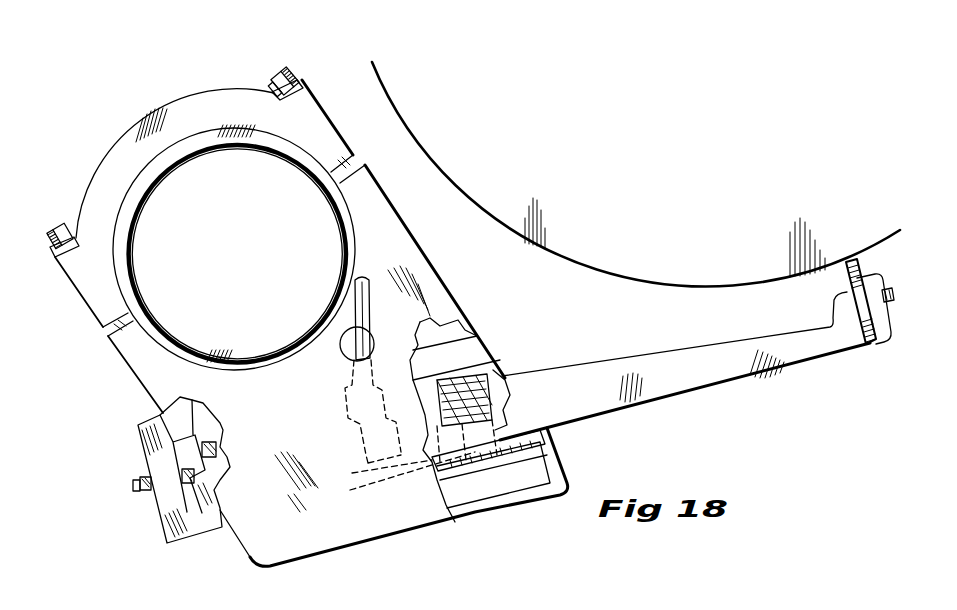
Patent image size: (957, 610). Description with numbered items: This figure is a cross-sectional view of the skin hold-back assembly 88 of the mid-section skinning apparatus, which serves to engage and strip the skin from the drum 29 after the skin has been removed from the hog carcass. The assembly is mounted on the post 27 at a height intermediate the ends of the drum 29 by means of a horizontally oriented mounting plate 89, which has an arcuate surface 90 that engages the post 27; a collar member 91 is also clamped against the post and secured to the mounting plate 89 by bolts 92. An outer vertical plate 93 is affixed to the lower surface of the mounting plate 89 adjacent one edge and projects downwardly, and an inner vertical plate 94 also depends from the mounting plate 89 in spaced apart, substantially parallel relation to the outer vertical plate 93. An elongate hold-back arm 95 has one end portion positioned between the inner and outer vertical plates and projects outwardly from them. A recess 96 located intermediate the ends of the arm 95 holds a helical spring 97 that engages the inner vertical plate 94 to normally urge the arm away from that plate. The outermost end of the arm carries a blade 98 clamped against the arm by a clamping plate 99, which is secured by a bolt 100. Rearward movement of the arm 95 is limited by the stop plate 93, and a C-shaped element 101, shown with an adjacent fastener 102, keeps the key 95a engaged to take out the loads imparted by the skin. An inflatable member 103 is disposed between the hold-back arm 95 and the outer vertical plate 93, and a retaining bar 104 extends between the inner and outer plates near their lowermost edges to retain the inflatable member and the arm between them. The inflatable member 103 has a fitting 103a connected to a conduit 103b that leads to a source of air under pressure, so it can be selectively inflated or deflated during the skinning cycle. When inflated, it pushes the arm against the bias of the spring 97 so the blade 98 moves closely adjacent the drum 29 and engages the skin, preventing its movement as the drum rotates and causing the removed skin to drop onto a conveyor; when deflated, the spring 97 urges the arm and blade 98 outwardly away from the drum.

The post 27 is at (290, 162).
The drum 29 is at (650, 302).
The skin hold-back assembly 88 is at (760, 436).
The mounting plate 89 is at (300, 412).
The arcuate surface 90 is at (343, 208).
The clamp band 91 is at (150, 120).
The bolts 92 is at (278, 76).
The outer vertical plate 93 is at (481, 499).
The inner vertical plate 94 is at (458, 372).
The hold-back arm 95 is at (784, 368).
The key 95a is at (216, 450).
The recess 96 is at (470, 360).
The helical spring 97 is at (503, 365).
The blade 98 is at (862, 266).
The clamping plate 99 is at (913, 337).
The bolt 100 is at (908, 293).
The C-shaped element 101 is at (160, 516).
The screw 102 is at (133, 486).
The inflatable member 103 is at (443, 472).
The fitting 103a is at (372, 428).
The conduit 103b is at (364, 276).
The retaining bar 104 is at (540, 434).